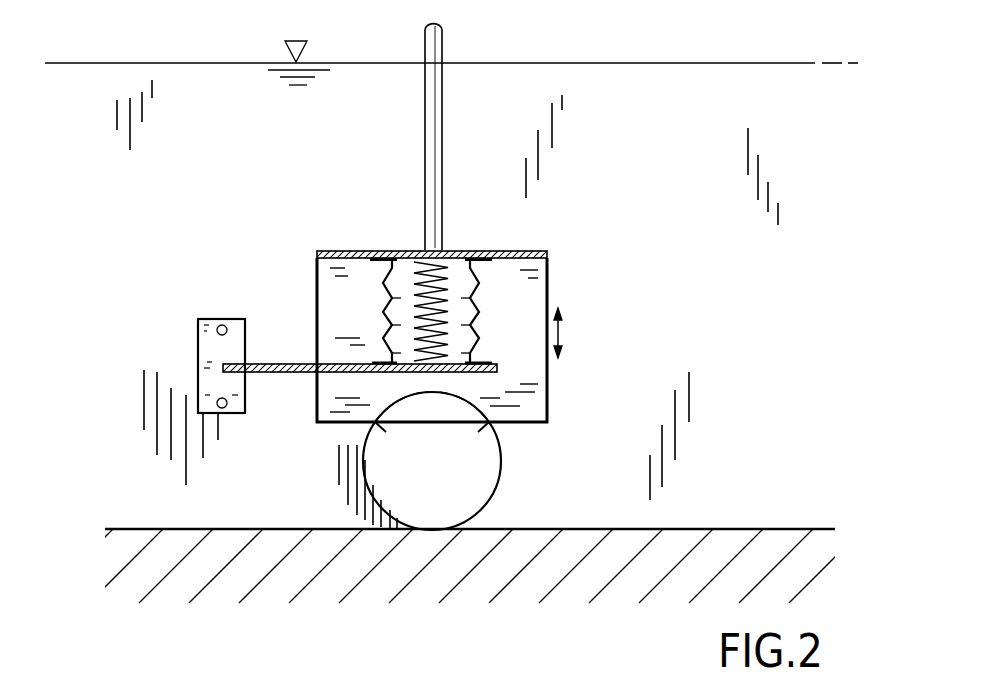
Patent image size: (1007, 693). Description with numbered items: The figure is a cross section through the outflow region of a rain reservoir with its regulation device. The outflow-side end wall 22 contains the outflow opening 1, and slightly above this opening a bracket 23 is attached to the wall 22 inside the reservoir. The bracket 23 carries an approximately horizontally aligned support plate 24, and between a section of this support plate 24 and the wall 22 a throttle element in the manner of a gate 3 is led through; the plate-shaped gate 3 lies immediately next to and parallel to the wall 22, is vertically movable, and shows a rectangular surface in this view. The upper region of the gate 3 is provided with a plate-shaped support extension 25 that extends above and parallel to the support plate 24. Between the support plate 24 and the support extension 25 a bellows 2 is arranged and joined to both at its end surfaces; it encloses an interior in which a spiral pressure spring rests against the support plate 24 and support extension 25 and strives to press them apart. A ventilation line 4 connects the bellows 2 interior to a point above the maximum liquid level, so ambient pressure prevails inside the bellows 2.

The outflow opening 1 is at (487, 462).
The bellows 2 is at (470, 328).
The gate 3 is at (485, 409).
The ventilation line 4 is at (443, 130).
The outflow-side wall 22 is at (267, 189).
The bracket 23 is at (272, 312).
The support plate 24 is at (285, 373).
The support extension 25 is at (352, 250).